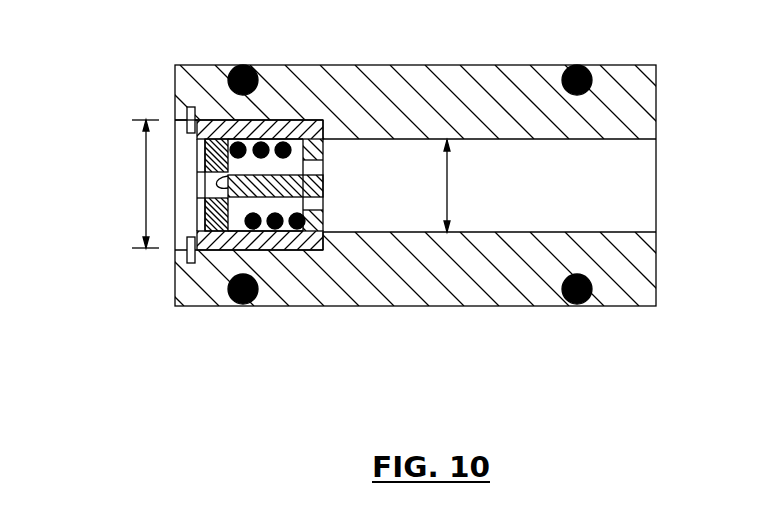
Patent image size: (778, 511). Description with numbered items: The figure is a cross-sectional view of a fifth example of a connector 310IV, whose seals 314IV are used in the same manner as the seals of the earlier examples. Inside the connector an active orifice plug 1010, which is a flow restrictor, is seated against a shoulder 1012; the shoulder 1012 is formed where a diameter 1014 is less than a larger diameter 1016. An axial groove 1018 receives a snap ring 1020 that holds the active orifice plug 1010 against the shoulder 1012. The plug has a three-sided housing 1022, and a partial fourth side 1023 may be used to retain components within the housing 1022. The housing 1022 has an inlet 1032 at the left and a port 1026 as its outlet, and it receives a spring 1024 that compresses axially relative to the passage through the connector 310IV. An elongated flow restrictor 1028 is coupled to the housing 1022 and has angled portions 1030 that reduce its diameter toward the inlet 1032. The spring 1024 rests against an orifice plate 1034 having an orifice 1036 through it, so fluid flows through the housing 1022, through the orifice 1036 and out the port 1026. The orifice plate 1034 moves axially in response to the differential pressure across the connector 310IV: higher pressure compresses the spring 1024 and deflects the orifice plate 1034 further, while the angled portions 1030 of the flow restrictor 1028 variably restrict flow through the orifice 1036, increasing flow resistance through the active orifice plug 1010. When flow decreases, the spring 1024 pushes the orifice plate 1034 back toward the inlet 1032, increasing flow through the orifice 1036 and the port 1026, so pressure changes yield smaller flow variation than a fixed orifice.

The connector 310IV is at (368, 65).
The seals 314IV is at (582, 38).
The active orifice plug 1010 is at (221, 250).
The shoulder 1012 is at (324, 234).
The diameter 1014 is at (470, 186).
The diameter 1016 is at (127, 184).
The axial groove 1018 is at (190, 107).
The snap ring 1020 is at (200, 250).
The housing 1022 is at (273, 237).
The partial fourth side 1023 is at (202, 150).
The spring 1024 is at (297, 231).
The port 1026 is at (320, 207).
The elongated flow restrictor 1028 is at (290, 176).
The angled portions 1030 is at (228, 183).
The inlet 1032 is at (202, 180).
The orifice plate 1034 is at (230, 184).
The orifice 1036 is at (210, 157).